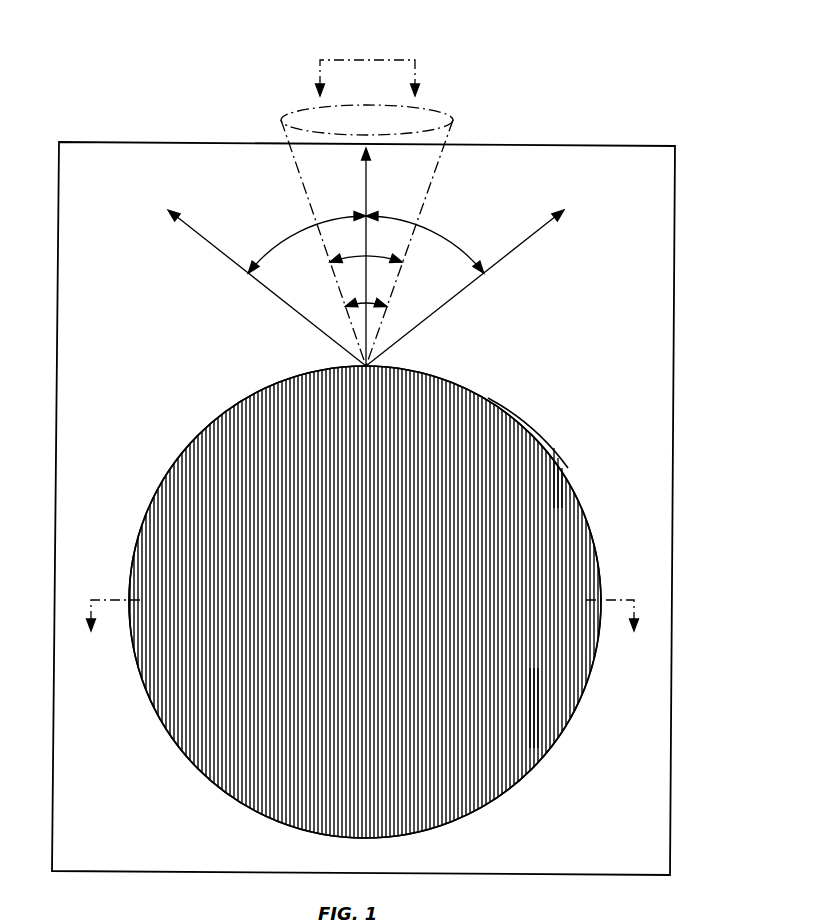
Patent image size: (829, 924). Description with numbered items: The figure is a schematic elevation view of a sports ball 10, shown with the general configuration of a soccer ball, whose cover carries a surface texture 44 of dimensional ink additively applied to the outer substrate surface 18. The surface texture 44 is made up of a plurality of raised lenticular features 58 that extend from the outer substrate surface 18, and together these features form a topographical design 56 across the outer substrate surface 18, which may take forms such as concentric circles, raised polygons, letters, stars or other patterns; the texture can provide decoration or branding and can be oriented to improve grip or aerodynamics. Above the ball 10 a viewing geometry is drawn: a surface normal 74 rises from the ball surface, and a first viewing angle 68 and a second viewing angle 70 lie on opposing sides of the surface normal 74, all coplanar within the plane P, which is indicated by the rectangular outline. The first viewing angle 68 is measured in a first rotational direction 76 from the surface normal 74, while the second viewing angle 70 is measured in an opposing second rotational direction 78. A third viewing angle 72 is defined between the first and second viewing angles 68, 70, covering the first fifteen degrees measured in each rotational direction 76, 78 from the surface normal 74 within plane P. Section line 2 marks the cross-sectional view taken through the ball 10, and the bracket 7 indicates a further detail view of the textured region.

The light source 7 is at (363, 52).
The surface normal 74 is at (360, 190).
The third viewing angle 72 is at (368, 247).
The first viewing angle 68 is at (313, 215).
The second viewing angle 70 is at (404, 216).
The first rotational direction 76 is at (350, 295).
The second rotational direction 78 is at (367, 295).
The sports ball 10 is at (176, 416).
The outer substrate surface 18 is at (512, 768).
The surface texture 44 is at (527, 703).
The topographical design 56 is at (537, 422).
The raised lenticular features 58 is at (560, 486).
The section line 2 is at (361, 636).
The plane P is at (667, 222).